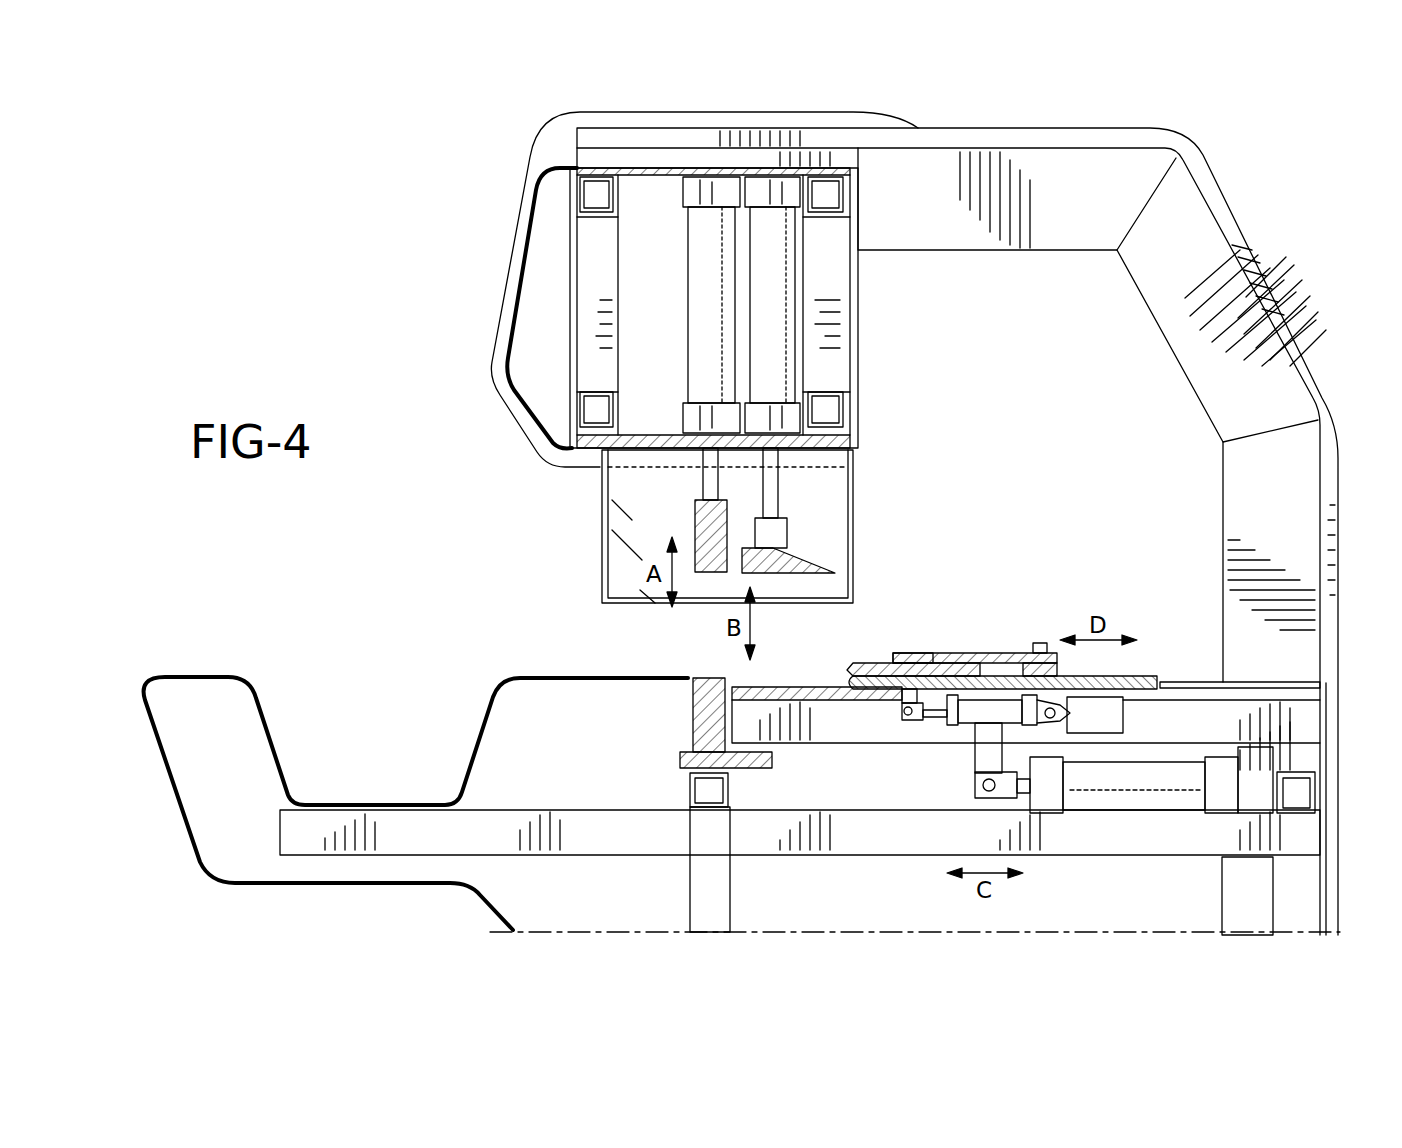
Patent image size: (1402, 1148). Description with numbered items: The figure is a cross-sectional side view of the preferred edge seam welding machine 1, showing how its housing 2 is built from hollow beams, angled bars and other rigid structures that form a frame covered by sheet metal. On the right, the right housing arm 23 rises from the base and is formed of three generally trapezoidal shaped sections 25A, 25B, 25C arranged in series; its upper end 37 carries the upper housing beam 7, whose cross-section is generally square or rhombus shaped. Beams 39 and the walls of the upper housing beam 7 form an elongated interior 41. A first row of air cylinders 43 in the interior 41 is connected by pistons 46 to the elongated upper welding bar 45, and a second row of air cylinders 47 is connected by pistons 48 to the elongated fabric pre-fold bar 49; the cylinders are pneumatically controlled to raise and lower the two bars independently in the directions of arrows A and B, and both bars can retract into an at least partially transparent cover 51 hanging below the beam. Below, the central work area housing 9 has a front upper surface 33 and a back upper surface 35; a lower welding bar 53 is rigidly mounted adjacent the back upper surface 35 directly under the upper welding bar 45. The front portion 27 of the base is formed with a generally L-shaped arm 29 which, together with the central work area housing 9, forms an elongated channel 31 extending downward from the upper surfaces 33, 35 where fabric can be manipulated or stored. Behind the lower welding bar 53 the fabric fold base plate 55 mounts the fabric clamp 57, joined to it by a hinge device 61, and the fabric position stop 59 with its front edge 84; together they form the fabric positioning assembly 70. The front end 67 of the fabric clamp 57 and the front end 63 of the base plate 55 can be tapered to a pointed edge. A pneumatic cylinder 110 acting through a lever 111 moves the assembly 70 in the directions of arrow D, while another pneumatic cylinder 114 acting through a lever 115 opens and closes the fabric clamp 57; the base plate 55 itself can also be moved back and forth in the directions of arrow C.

The welding machine 1 is at (1240, 126).
The housing 2 is at (478, 902).
The upper housing beam 7 is at (532, 190).
The central work area housing 9 is at (373, 803).
The L-shaped arm 29 is at (170, 808).
The right housing arm 23 is at (1272, 228).
The trapezoidal shaped section 25A is at (1070, 233).
The trapezoidal shaped section 25B is at (1215, 385).
The trapezoidal shaped section 25C is at (1247, 493).
The front portion 27 is at (160, 772).
The elongated channel 31 is at (310, 738).
The front upper surface 33 is at (193, 673).
The back upper surface 35 is at (625, 676).
The upper ends 37 is at (942, 130).
The beams 39 is at (655, 190).
The elongated interior 41 is at (640, 353).
The first row of air cylinders 43 is at (708, 250).
The upper welding bar 45 is at (698, 528).
The pistons 46 is at (706, 486).
The second row of air cylinders 47 is at (763, 290).
The pistons 48 is at (777, 500).
The fabric pre-fold bar 49 is at (803, 557).
The cover 51 is at (592, 497).
The lower welding bar 53 is at (708, 678).
The fabric fold base plate 55 is at (1147, 677).
The fabric clamp 57 is at (860, 676).
The fabric position stop 59 is at (1008, 640).
The hinge device 61 is at (987, 670).
The front end 63 is at (856, 690).
The front end 67 is at (847, 670).
The fabric positioning assembly 70 is at (1044, 632).
The front edge 84 is at (886, 652).
The pneumatic cylinder 110 is at (1135, 785).
The lever 111 is at (973, 765).
The pneumatic cylinder 114 is at (973, 730).
The lever 115 is at (917, 653).